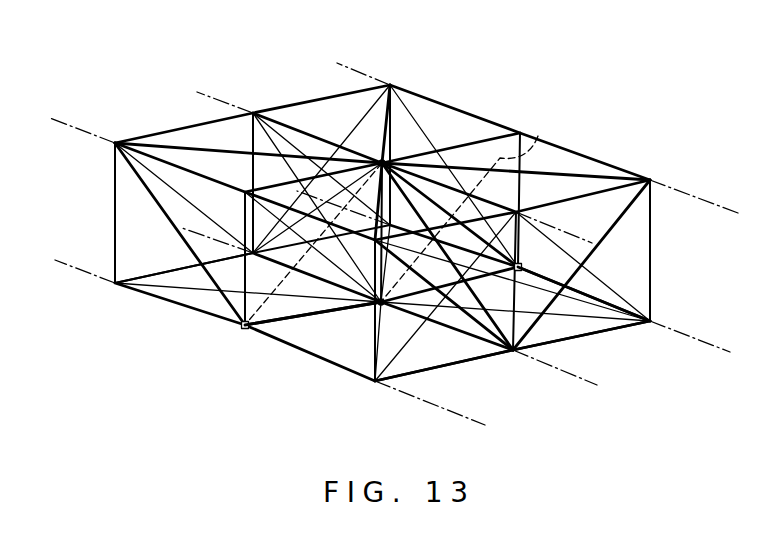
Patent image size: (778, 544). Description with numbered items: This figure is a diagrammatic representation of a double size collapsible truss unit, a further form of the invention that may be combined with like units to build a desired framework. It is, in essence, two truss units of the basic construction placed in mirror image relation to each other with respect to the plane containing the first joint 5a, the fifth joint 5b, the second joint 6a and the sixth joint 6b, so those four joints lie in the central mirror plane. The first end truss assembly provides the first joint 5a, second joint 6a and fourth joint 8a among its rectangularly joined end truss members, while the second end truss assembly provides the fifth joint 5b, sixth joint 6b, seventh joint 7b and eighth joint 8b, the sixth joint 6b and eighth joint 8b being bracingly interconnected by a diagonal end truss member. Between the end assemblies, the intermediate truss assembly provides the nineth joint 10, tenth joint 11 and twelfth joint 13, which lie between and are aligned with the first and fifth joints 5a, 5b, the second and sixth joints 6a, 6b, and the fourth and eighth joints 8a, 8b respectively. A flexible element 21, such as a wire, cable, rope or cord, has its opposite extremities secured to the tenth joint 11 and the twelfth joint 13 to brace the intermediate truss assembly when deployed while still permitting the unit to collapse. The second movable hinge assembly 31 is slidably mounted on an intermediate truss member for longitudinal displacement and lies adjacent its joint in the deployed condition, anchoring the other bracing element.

The first joint 5a is at (253, 113).
The fifth joint 5b is at (516, 212).
The second joint 6a is at (253, 253).
The sixth joint 6b is at (513, 350).
The seventh joint 7b is at (650, 321).
The fourth joint 8a is at (390, 85).
The eighth joint 8b is at (650, 180).
The nineth joint 10 is at (382, 163).
The tenth joint 11 is at (381, 302).
The twelfth joint 13 is at (520, 133).
The flexible element 21 is at (538, 136).
The second movable hinge assembly 31 is at (523, 267).